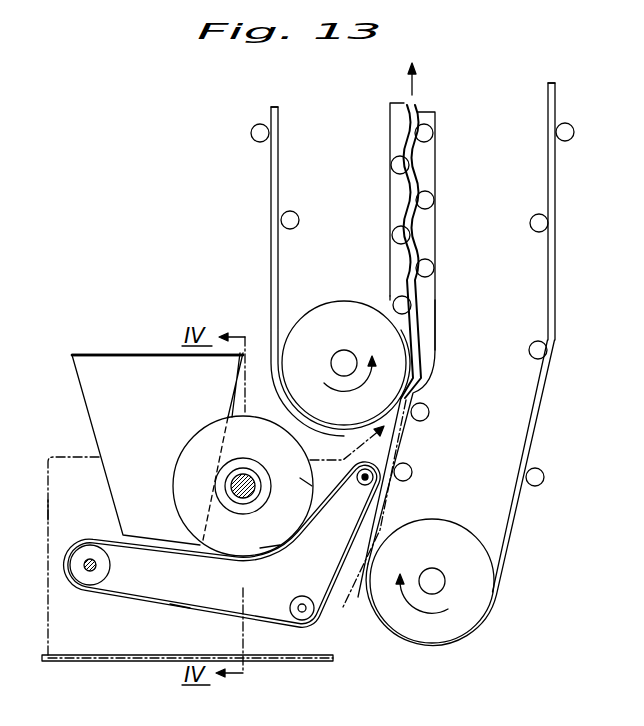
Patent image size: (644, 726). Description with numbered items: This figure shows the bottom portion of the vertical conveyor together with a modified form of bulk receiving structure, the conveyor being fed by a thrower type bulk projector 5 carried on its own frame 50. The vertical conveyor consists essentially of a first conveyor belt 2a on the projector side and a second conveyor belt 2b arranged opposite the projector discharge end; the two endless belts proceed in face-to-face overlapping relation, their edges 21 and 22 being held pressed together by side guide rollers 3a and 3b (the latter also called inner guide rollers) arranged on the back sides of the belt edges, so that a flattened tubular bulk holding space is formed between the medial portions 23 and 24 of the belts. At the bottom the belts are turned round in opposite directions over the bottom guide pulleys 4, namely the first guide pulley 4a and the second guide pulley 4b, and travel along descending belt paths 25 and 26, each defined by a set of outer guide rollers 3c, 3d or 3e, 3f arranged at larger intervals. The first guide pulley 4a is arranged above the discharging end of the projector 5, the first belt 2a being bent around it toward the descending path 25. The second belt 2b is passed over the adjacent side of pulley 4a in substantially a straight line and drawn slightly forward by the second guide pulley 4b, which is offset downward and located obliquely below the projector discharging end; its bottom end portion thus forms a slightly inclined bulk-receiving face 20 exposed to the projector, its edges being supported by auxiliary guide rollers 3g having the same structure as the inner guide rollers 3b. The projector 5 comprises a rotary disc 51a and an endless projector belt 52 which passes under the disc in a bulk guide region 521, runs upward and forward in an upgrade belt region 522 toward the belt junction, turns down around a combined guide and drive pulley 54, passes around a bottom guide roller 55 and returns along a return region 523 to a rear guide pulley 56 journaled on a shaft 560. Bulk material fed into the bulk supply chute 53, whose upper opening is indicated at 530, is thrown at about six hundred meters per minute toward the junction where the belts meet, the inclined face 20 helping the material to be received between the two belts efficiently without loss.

The first conveyor belt 2a is at (264, 178).
The second conveyor belt 2b is at (563, 192).
The side guide rollers 3a is at (393, 180).
The side guide rollers 3b is at (431, 262).
The outer guide roller 3c is at (252, 130).
The outer guide roller 3d is at (296, 214).
The outer guide roller 3e is at (573, 128).
The outer guide roller 3f is at (546, 230).
The auxiliary guide rollers 3g is at (430, 410).
The conveying path 4 is at (446, 376).
The first guide pulley 4a is at (301, 316).
The second guide pulley 4b is at (488, 548).
The thrower type bulk projector 5 is at (64, 433).
The bulk receiving face 20 is at (396, 440).
The belt edge 21 is at (390, 148).
The belt edge 22 is at (420, 163).
The medial belt portion 23 is at (390, 256).
The medial belt portion 24 is at (437, 192).
The descending belt path 25 is at (281, 108).
The descending belt path 26 is at (547, 108).
The frame 50 is at (47, 480).
The rotary disc 51a is at (190, 440).
The endless projector belt 52 is at (131, 610).
The bulk supply chute 53 is at (65, 365).
The combined guide and drive pulley 54 is at (352, 472).
The bottom guide roller 55 is at (322, 610).
The rear guide pulley 56 is at (95, 544).
The bulk guide region 521 is at (278, 552).
The upgrade belt region 522 is at (315, 485).
The belt return region 523 is at (182, 610).
The hopper top edge 530 is at (123, 352).
The shaft 560 is at (84, 565).